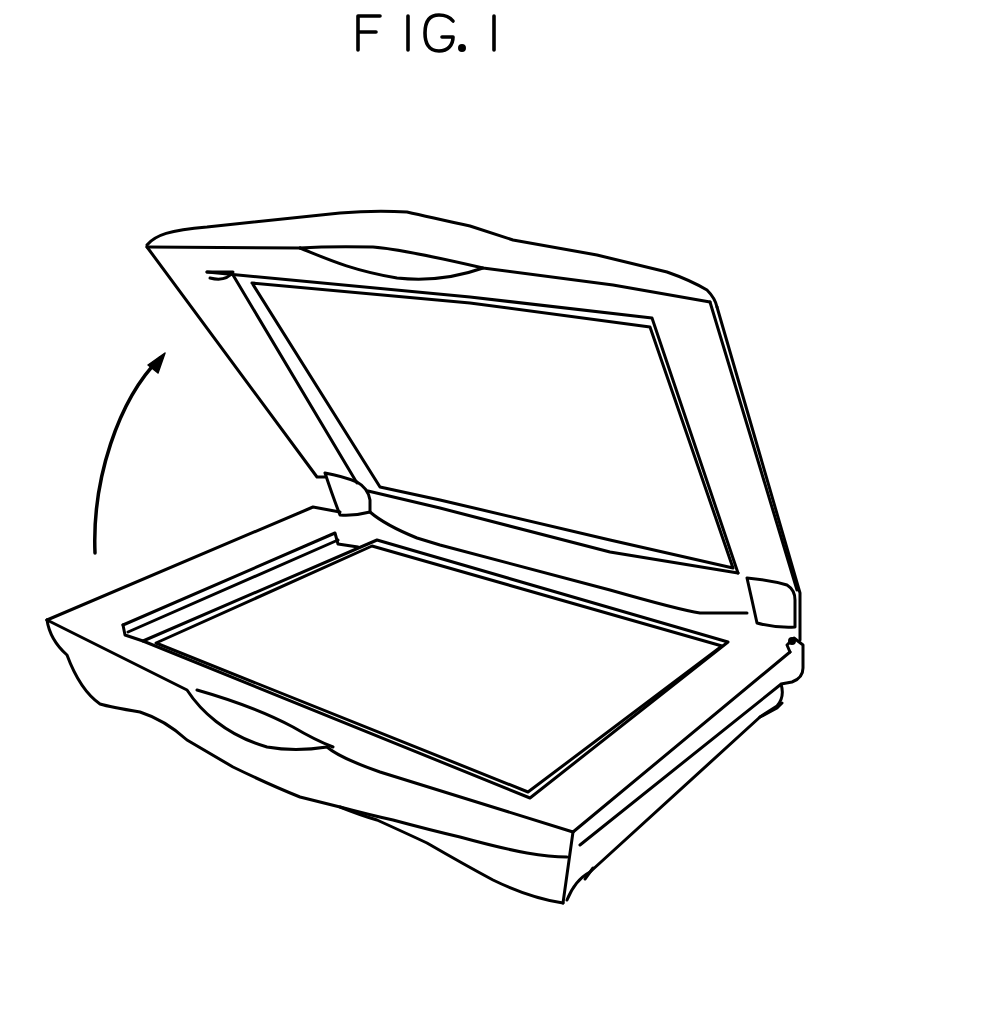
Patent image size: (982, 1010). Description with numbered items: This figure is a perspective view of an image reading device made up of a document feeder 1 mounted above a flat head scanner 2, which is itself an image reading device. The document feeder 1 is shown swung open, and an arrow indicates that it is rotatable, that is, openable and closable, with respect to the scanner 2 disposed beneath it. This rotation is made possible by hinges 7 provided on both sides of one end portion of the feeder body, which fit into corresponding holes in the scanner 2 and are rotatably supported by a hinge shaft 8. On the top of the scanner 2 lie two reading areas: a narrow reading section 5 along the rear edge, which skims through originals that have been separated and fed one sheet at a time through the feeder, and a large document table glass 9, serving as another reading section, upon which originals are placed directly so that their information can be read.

The document feeder 1 is at (663, 283).
The flat head scanner 2 is at (667, 790).
The reading section 5 is at (240, 590).
The hinges 7 is at (345, 500).
The hinge shaft 8 is at (795, 642).
The document table glass 9 is at (447, 745).